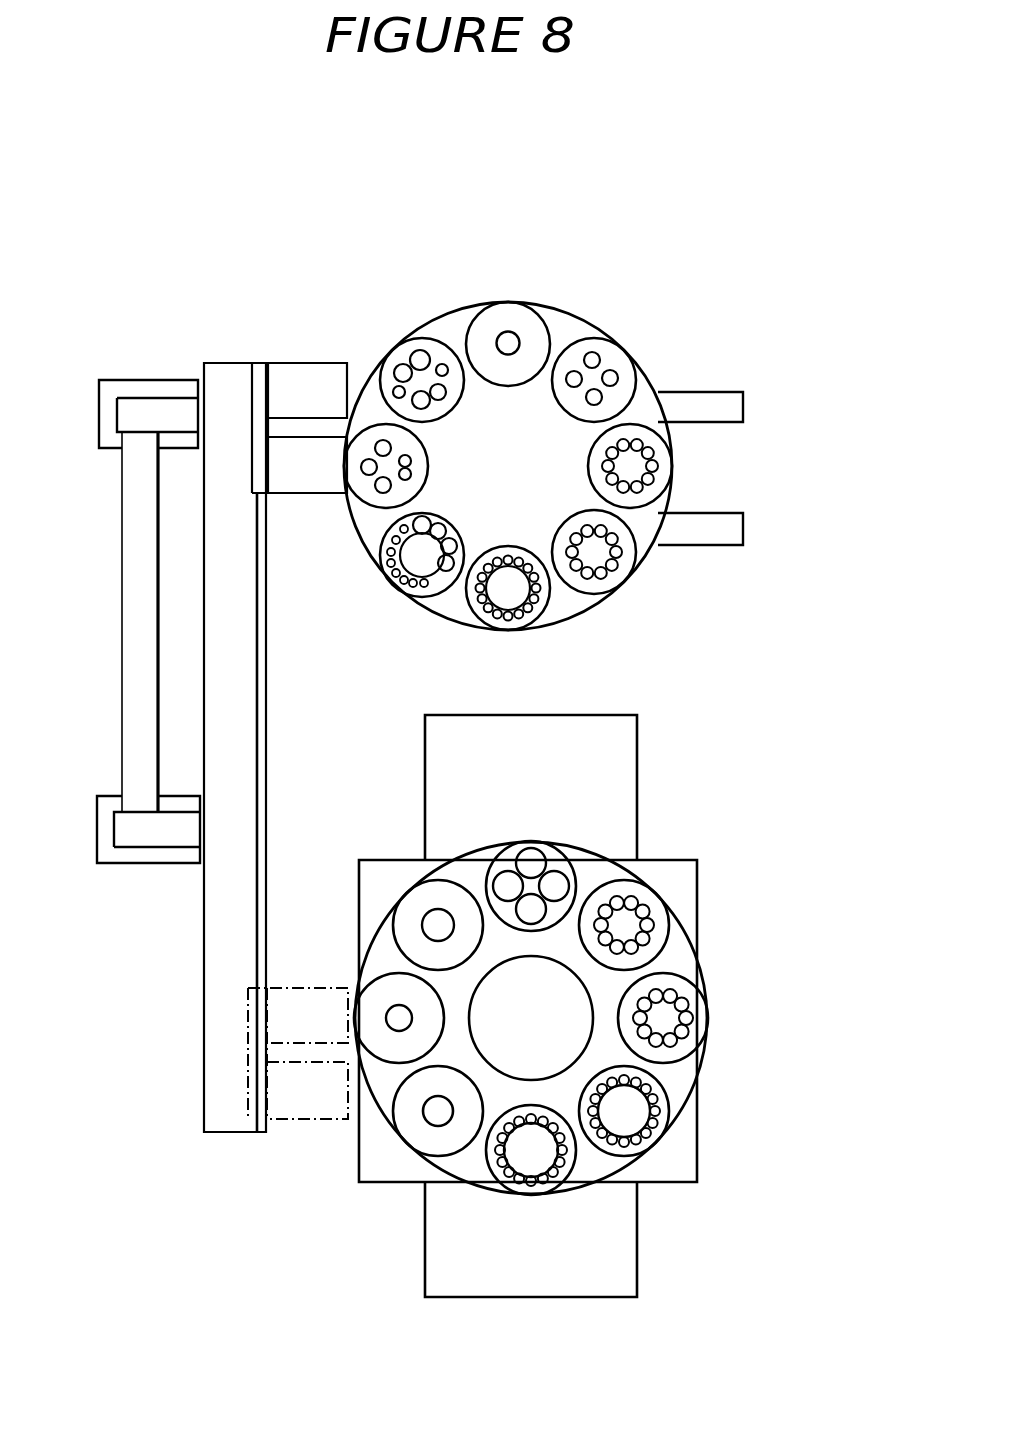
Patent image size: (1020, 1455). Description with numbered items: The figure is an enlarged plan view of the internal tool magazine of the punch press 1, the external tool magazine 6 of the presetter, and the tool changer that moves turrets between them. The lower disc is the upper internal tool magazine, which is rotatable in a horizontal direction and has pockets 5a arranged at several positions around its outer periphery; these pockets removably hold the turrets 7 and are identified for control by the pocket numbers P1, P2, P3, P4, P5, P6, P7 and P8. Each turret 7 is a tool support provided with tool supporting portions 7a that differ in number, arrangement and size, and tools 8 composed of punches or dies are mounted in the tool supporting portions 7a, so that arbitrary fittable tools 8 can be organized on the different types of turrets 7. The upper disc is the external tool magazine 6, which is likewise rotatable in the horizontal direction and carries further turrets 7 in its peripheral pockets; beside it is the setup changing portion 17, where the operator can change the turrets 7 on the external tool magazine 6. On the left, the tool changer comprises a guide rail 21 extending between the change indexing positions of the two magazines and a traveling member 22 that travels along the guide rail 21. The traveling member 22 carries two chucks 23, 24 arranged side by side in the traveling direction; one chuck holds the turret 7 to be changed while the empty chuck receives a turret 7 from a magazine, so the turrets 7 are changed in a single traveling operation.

The punch press 1 is at (638, 788).
The pocket 5a is at (553, 852).
The external tool magazine 6 is at (562, 329).
The turret 7 is at (496, 320).
The tool supporting portion 7a is at (520, 343).
The tool 8 is at (497, 343).
The setup changing portion 17 is at (694, 483).
The guide rail 21 is at (222, 884).
The traveling member 22 is at (262, 470).
The chuck 23 is at (290, 477).
The chuck 24 is at (297, 383).
The pocket number P1 is at (670, 938).
The pocket number P2 is at (657, 983).
The pocket number P3 is at (660, 1097).
The pocket number P4 is at (580, 1157).
The pocket number P5 is at (480, 1155).
The pocket number P6 is at (358, 990).
The pocket number P7 is at (400, 888).
The pocket number P8 is at (508, 862).